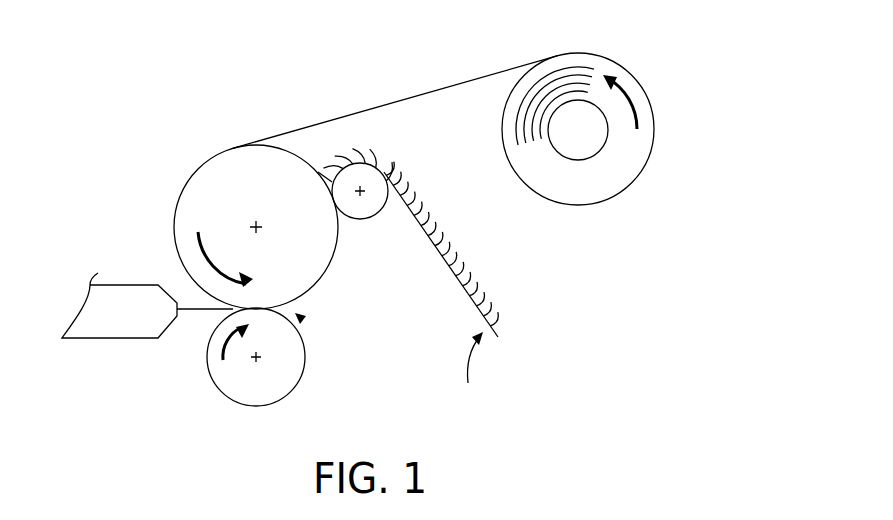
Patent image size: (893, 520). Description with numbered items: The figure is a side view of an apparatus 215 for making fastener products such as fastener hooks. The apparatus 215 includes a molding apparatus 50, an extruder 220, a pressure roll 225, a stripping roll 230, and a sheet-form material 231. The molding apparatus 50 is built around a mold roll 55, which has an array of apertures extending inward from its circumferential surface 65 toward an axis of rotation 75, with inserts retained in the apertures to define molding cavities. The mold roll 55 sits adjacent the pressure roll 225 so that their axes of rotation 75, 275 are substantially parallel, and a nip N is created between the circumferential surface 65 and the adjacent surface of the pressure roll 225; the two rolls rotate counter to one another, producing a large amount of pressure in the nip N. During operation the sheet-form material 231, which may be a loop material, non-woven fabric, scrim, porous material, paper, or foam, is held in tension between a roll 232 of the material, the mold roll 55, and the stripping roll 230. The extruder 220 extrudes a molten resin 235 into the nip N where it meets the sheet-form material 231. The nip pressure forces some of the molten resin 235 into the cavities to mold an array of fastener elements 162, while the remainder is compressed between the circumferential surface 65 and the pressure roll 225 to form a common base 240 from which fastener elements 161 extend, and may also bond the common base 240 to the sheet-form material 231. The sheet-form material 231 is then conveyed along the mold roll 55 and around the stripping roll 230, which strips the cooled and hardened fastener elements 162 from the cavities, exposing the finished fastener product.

The molding apparatus 50 is at (213, 204).
The mold roll 55 is at (190, 215).
The circumferential surface 65 is at (178, 260).
The axis of rotation 75 is at (254, 226).
The apparatus 215 is at (396, 107).
The sheet-form material 231 is at (448, 83).
The roll 232 is at (656, 137).
The stripping roll 230 is at (378, 219).
The common base 240 is at (467, 298).
The fastener elements 162 is at (468, 268).
The fastener elements 161 is at (469, 373).
The nip N is at (300, 318).
The extruder 220 is at (147, 322).
The molten resin 235 is at (203, 312).
The pressure roll 225 is at (266, 376).
The axis of rotation 275 is at (254, 362).